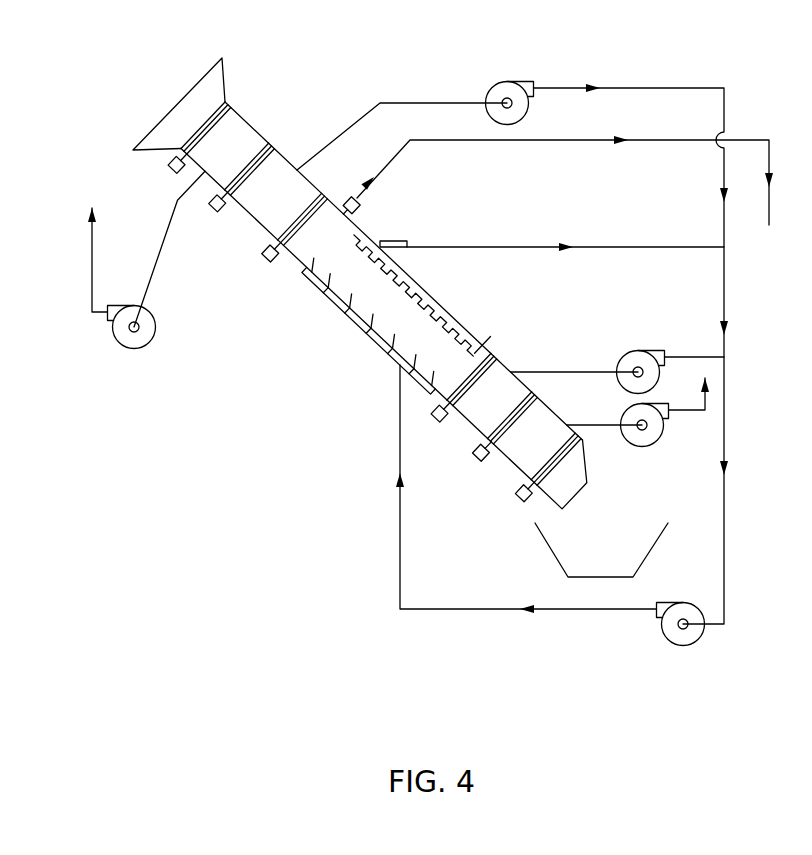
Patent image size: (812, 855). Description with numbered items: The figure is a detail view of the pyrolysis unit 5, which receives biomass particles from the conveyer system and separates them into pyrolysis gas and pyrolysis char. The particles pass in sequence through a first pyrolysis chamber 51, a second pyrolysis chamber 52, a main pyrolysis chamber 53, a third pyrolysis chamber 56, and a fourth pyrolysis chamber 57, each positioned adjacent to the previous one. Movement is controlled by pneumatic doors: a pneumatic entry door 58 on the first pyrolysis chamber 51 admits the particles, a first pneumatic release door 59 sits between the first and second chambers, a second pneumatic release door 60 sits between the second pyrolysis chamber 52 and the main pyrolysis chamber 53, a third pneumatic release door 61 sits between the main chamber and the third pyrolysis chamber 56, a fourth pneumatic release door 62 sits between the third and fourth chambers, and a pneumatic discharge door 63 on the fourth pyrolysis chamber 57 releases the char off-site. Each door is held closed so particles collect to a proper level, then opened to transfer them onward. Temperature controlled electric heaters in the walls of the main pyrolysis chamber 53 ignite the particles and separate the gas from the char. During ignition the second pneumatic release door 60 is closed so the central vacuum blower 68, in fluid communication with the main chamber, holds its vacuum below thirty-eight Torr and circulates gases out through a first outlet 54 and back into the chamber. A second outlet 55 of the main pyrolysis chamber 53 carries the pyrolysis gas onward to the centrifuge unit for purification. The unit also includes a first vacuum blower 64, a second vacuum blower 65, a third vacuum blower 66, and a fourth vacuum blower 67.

The pyrolysis unit 5 is at (101, 469).
The first pyrolysis chamber 51 is at (240, 159).
The second pyrolysis chamber 52 is at (288, 206).
The main pyrolysis chamber 53 is at (339, 250).
The first outlet 54 is at (404, 242).
The second outlet 55 is at (347, 196).
The third pyrolysis chamber 56 is at (503, 410).
The fourth pyrolysis chamber 57 is at (543, 452).
The pneumatic entry door 58 is at (169, 169).
The first pneumatic release door 59 is at (215, 212).
The second pneumatic release door 60 is at (268, 263).
The third pneumatic release door 61 is at (440, 423).
The fourth pneumatic release door 62 is at (476, 462).
The pneumatic discharge door 63 is at (520, 500).
The first vacuum blower 64 is at (130, 340).
The second vacuum blower 65 is at (517, 85).
The third vacuum blower 66 is at (634, 355).
The fourth vacuum blower 67 is at (645, 443).
The central vacuum blower 68 is at (677, 640).